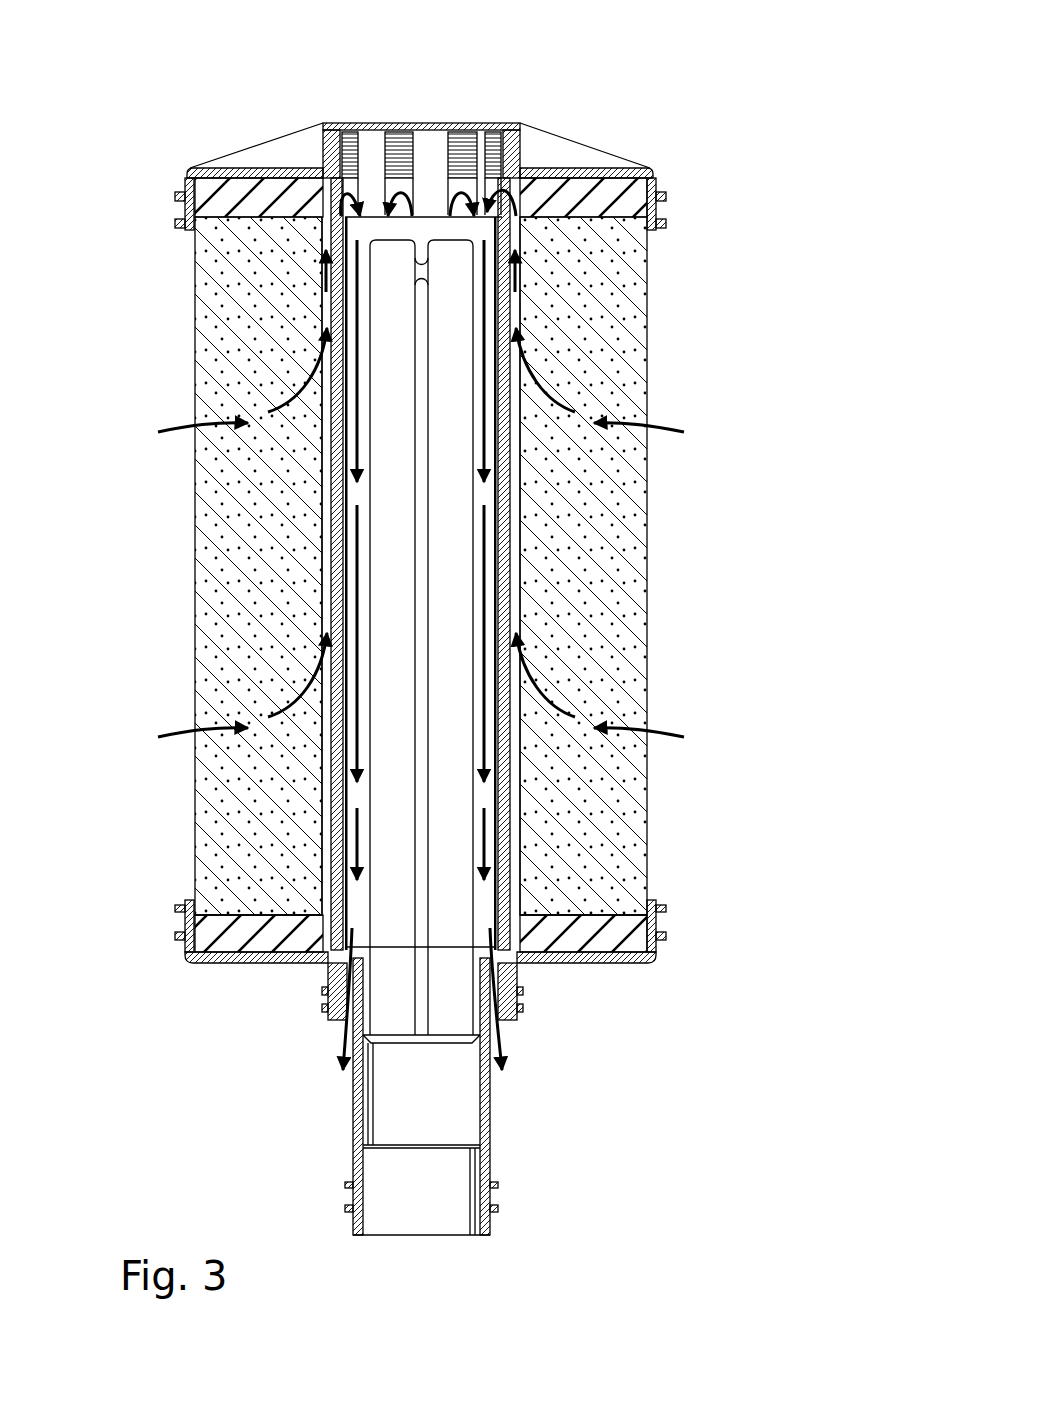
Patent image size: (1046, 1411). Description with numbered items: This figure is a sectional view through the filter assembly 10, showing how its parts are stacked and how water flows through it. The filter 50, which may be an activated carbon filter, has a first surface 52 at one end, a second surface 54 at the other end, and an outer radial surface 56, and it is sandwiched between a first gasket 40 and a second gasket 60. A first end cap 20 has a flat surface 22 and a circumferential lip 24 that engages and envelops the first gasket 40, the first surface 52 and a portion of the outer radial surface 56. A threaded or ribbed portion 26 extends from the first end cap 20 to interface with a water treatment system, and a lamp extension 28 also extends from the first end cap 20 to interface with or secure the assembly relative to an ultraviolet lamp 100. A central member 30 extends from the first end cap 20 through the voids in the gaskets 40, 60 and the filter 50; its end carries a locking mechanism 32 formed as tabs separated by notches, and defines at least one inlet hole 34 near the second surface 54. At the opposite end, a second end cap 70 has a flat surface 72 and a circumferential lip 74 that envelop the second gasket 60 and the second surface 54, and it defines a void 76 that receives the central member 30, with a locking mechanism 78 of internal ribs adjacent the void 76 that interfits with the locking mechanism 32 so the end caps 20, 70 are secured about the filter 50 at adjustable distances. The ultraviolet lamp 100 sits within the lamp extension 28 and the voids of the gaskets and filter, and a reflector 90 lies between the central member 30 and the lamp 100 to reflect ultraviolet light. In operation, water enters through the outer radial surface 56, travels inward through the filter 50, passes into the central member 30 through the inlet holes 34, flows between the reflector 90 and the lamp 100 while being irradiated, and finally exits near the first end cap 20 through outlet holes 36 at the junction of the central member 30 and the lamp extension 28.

The filter assembly 10 is at (652, 91).
The first end cap 20 is at (594, 988).
The flat surface 22 is at (237, 965).
The circumferential lip 24 is at (185, 920).
The threaded or ribbed portion 26 is at (335, 1010).
The lamp extension 28 is at (360, 1160).
The central member 30 is at (500, 595).
The locking mechanism 32 is at (462, 152).
The inlet hole 34 is at (427, 190).
The outlet hole 36 is at (490, 1015).
The first gasket 40 is at (640, 935).
The filter 50 is at (185, 640).
The first surface 52 is at (615, 915).
The second surface 54 is at (610, 222).
The outer radial surface 56 is at (195, 523).
The second gasket 60 is at (625, 188).
The second end cap 70 is at (272, 122).
The flat surface 72 is at (222, 178).
The circumferential lip 74 is at (188, 198).
The void 76 is at (378, 198).
The locking mechanism 78 is at (460, 152).
The reflector 90 is at (498, 575).
The ultraviolet lamp 100 is at (462, 1105).